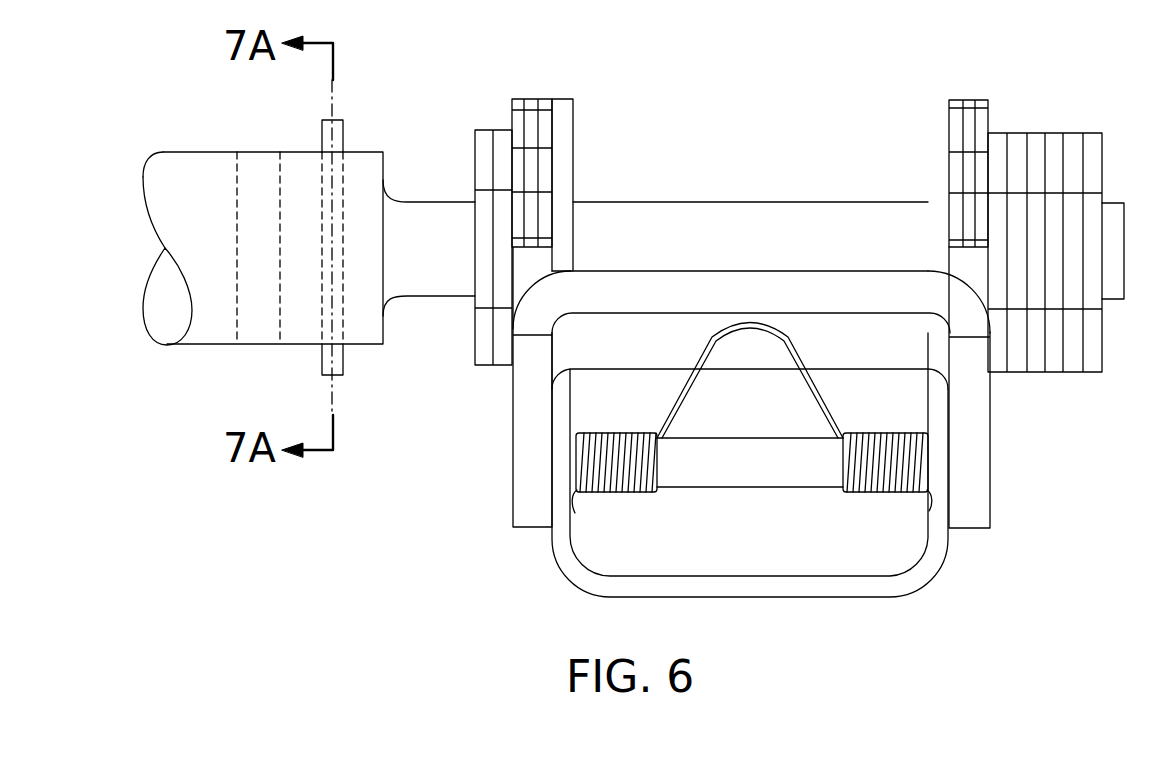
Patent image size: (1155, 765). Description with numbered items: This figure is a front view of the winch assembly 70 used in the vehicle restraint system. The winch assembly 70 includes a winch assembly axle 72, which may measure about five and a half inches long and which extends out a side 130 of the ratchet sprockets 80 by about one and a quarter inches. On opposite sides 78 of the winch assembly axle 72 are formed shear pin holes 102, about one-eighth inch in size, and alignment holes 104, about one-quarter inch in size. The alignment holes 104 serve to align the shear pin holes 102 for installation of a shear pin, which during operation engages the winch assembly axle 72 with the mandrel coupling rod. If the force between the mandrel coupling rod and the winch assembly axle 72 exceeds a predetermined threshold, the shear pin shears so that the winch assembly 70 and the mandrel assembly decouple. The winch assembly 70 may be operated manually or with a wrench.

The winch assembly 70 is at (750, 108).
The winch assembly axle 72 is at (143, 300).
The opposite sides of winch assembly axle 78 is at (213, 152).
The ratchet sprockets 80 is at (530, 98).
The shear pin holes 102 is at (342, 172).
The alignment holes 104 is at (235, 223).
The extended side of ratchet sprockets 130 is at (448, 322).